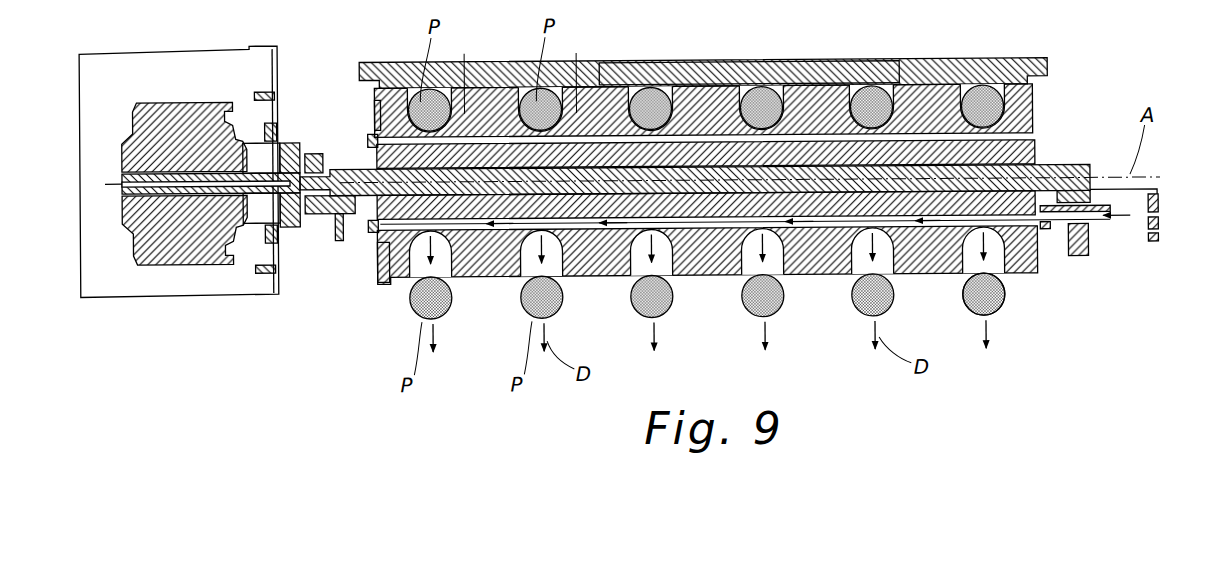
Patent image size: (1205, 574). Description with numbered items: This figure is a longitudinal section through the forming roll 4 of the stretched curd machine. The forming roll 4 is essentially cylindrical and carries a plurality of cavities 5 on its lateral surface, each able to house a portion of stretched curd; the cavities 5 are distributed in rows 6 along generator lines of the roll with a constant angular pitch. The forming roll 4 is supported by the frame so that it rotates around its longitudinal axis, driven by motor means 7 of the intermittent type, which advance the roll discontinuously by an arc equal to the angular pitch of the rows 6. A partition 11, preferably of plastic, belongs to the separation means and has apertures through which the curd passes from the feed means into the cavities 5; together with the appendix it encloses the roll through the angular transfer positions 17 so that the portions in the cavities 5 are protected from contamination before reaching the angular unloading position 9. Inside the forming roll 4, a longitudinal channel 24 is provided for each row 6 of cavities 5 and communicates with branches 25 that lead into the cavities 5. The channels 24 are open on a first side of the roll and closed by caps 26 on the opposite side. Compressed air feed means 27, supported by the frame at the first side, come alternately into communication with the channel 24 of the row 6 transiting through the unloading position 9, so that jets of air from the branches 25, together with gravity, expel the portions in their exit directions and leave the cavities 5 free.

The forming roll 4 is at (822, 260).
The cavities 5 is at (770, 86).
The rows 6 is at (1013, 114).
The motor means 7 is at (206, 295).
The angular unloading position 9 is at (1000, 314).
The partition 11 is at (853, 76).
The angular transfer positions 17 is at (1050, 83).
The longitudinal channel 24 is at (376, 113).
The branches 25 is at (606, 297).
The caps 26 is at (368, 138).
The compressed air feed means 27 is at (1092, 268).